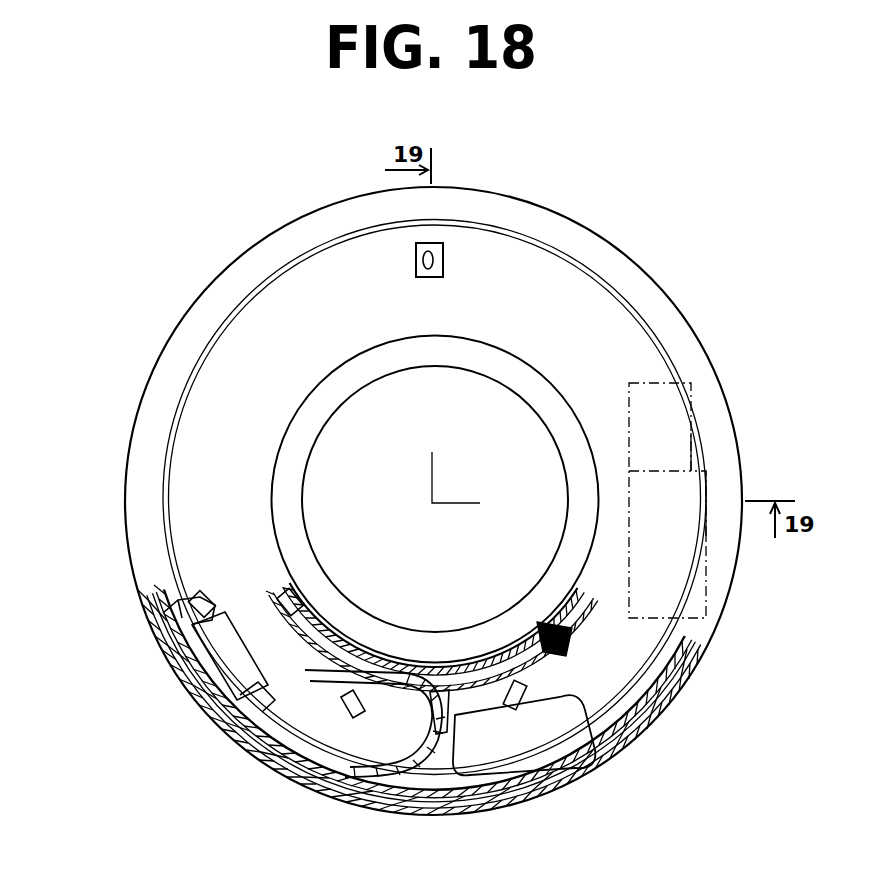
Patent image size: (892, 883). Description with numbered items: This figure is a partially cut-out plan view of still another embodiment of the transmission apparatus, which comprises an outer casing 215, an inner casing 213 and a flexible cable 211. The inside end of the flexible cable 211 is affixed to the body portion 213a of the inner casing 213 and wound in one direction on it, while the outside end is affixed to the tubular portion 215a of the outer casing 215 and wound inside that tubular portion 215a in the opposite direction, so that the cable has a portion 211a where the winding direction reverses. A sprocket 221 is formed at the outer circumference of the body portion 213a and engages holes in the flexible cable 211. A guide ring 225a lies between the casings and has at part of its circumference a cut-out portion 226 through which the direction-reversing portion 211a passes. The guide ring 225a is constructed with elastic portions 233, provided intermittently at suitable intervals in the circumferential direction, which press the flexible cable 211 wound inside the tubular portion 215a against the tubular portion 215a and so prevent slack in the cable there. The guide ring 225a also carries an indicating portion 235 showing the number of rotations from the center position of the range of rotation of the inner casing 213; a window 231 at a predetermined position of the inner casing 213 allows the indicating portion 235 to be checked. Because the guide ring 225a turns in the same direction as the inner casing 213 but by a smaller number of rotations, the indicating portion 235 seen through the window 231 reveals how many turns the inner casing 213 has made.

The outer casing 215 is at (129, 507).
The tubular portion 215a is at (195, 655).
The window 231 is at (415, 255).
The indicating portion 235 is at (436, 255).
The inner casing 213 is at (535, 547).
The body portion 213a is at (345, 645).
The flexible cable 211 is at (478, 660).
The winding direction reversing portion 211a is at (408, 775).
The sprocket 221 is at (350, 695).
The guide ring 225a is at (283, 745).
The cut-out portion 226 is at (445, 760).
The elastic portions 233 is at (238, 690).